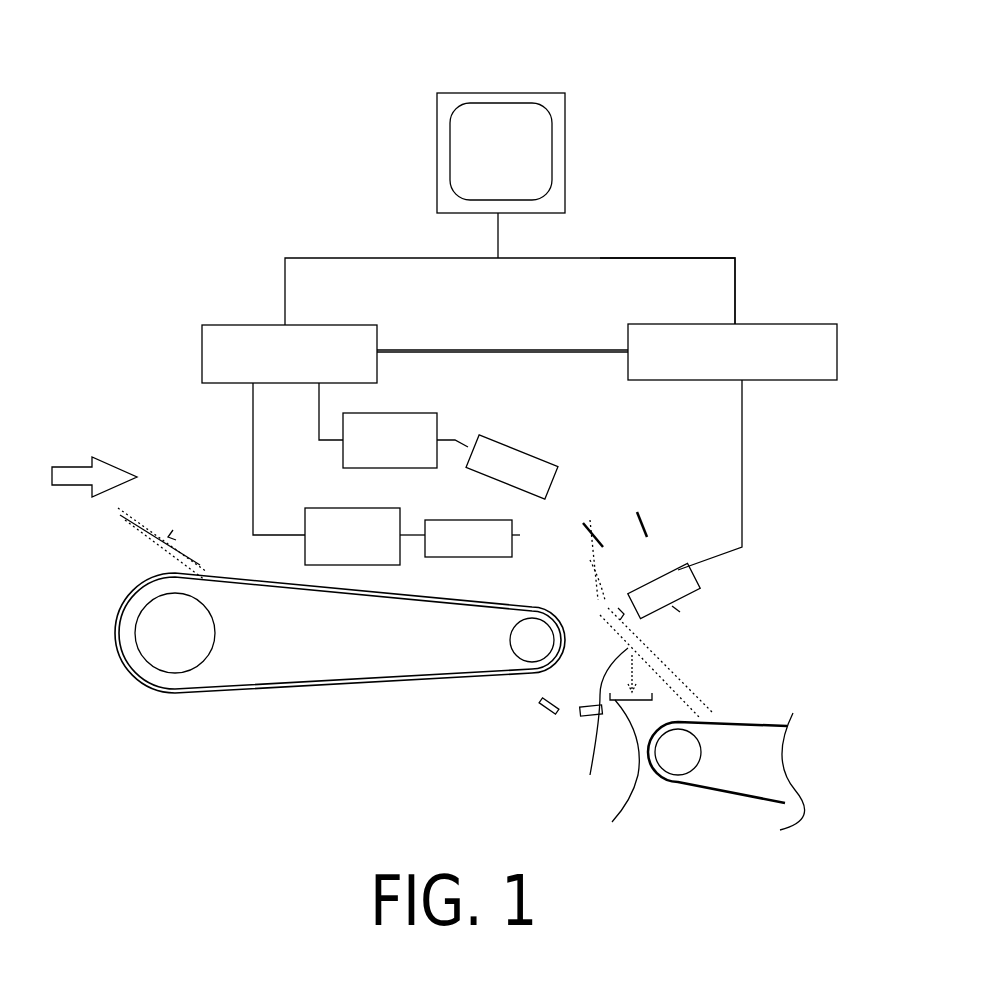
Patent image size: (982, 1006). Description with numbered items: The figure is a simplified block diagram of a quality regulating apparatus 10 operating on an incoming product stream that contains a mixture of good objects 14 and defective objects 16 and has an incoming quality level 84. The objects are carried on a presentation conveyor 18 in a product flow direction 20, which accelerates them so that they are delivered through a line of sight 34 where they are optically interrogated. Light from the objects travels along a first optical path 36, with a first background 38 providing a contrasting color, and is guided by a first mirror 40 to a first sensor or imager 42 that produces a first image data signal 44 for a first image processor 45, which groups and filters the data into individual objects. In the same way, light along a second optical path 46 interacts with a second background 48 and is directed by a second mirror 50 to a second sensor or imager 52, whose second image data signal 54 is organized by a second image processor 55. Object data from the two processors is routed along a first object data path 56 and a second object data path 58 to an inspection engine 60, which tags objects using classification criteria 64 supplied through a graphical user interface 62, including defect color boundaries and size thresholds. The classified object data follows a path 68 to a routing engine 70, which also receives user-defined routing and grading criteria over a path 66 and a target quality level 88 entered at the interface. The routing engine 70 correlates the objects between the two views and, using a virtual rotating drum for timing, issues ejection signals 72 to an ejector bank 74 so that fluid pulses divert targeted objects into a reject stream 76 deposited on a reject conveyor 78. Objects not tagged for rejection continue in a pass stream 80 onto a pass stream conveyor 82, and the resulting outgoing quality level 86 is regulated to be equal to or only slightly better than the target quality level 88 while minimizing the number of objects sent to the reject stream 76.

The quality regulating apparatus 10 is at (512, 14).
The good object 14 is at (130, 508).
The defective object 16 is at (173, 535).
The presentation conveyor 18 is at (268, 660).
The product flow direction 20 is at (72, 465).
The line of sight 34 is at (605, 612).
The first optical path 36 is at (590, 567).
The first background 38 is at (590, 720).
The first mirror 40 is at (590, 510).
The first sensor or imager 42 is at (430, 520).
The first image data signal 44 is at (418, 535).
The first image processor 45 is at (357, 508).
The second optical path 46 is at (580, 495).
The second background 48 is at (537, 703).
The second mirror 50 is at (650, 518).
The second sensor or imager 52 is at (515, 447).
The second image data signal 54 is at (455, 438).
The second image processor 55 is at (400, 413).
The first object data path 56 is at (253, 450).
The second object data path 58 is at (319, 420).
The inspection engine 60 is at (202, 355).
The graphical user interface 62 is at (437, 145).
The classification criteria 64 is at (310, 258).
The path for routing and grading criteria 66 is at (680, 258).
The classified object data path 68 is at (455, 350).
The routing engine 70 is at (765, 324).
The ejection signals 72 is at (742, 470).
The ejector bank 74 is at (675, 607).
The reject stream 76 is at (596, 762).
The reject conveyor 78 is at (612, 773).
The pass stream 80 is at (660, 668).
The pass stream conveyor 82 is at (750, 780).
The incoming quality level 84 is at (163, 480).
The outgoing quality level 86 is at (733, 660).
The target quality level 88 is at (620, 160).